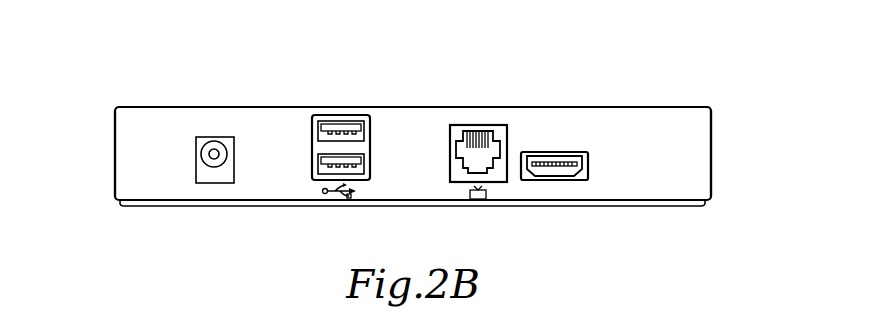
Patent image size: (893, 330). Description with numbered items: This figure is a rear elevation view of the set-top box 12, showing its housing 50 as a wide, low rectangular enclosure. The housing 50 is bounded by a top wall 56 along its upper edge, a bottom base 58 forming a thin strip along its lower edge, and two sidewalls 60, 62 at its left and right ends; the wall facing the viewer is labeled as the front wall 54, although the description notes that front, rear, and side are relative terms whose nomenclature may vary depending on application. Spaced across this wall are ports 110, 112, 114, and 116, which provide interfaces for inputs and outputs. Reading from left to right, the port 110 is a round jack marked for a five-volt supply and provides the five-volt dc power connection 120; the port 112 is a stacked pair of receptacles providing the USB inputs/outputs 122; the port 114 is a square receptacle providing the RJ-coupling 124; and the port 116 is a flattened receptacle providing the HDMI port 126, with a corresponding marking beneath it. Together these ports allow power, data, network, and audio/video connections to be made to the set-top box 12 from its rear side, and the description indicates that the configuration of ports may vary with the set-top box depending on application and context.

The set-top box 12 is at (139, 95).
The housing 50 is at (686, 98).
The front wall 54 is at (149, 190).
The top wall 56 is at (183, 105).
The bottom base 58 is at (268, 208).
The sidewall 60 is at (115, 153).
The sidewall 62 is at (711, 152).
The port 110 is at (226, 138).
The port 112 is at (340, 115).
The port 114 is at (479, 126).
The port 116 is at (554, 152).
The 5V dc power connection 120 is at (212, 184).
The USB inputs/outputs 122 is at (322, 176).
The RJ-coupling 124 is at (497, 172).
The HDMI port 126 is at (582, 180).